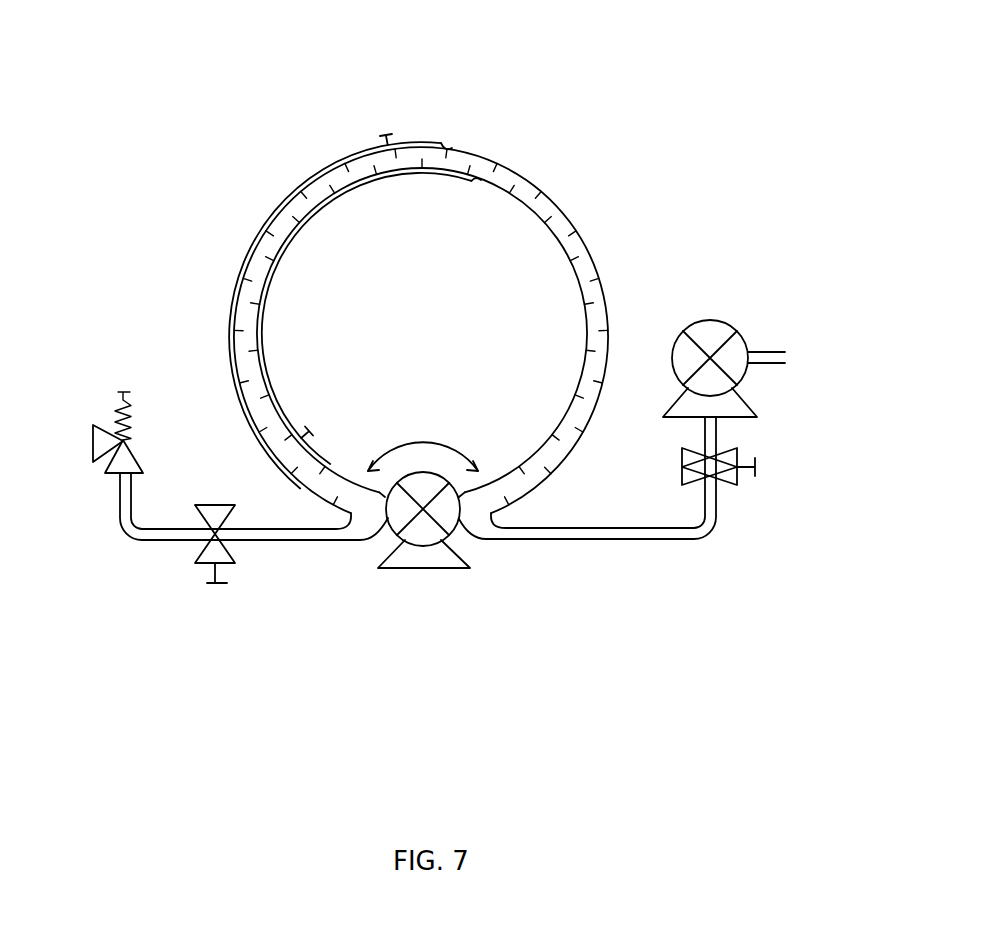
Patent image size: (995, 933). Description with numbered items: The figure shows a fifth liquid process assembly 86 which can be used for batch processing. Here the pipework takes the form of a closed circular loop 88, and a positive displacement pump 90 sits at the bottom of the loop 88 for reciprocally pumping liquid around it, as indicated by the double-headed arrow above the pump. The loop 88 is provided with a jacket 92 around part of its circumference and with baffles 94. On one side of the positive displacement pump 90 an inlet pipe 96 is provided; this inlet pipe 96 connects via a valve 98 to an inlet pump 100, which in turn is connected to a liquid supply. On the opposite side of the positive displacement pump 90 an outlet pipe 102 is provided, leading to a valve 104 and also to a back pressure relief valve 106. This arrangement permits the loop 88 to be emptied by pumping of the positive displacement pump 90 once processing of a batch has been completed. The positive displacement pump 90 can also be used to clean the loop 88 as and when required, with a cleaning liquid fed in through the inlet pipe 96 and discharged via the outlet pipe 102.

The fifth assembly 86 is at (479, 274).
The closed circular loop 88 is at (584, 241).
The positive displacement pump 90 is at (445, 513).
The jacket 92 is at (298, 185).
The baffles 94 is at (472, 160).
The inlet pipe 96 is at (600, 540).
The valve 98 is at (728, 477).
The inlet pump 100 is at (713, 322).
The outlet pipe 102 is at (308, 542).
The valve 104 is at (205, 563).
The back pressure relief valve 106 is at (102, 476).